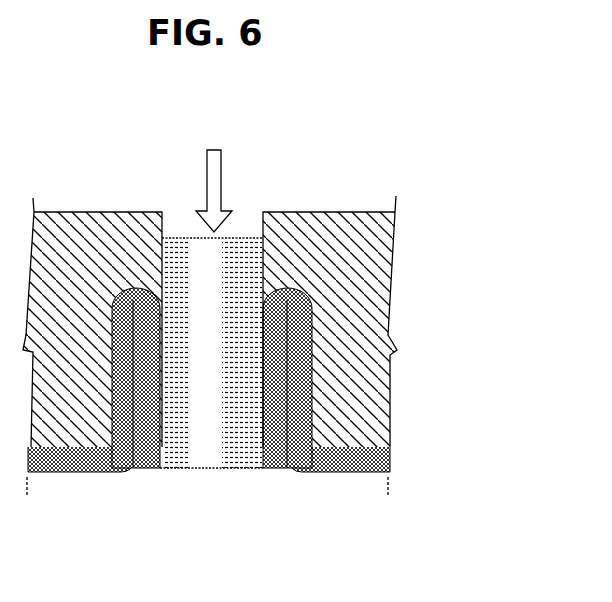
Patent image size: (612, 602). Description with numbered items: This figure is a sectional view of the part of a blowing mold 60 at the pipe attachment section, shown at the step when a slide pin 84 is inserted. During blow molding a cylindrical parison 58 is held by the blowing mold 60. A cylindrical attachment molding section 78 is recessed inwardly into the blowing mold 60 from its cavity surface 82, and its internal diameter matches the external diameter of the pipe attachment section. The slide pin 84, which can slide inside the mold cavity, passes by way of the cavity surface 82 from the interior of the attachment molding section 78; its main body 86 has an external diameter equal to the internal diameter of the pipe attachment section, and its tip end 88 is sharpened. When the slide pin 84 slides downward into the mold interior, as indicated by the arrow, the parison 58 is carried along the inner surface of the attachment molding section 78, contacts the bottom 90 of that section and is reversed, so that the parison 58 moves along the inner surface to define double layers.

The parison 58 is at (333, 475).
The blowing mold 60 is at (280, 282).
The attachment molding section 78 is at (297, 337).
The cavity surface 82 is at (390, 458).
The slide pin 84 is at (393, 228).
The main body 86 is at (192, 395).
The tip end 88 is at (208, 463).
The bottom 90 is at (217, 273).